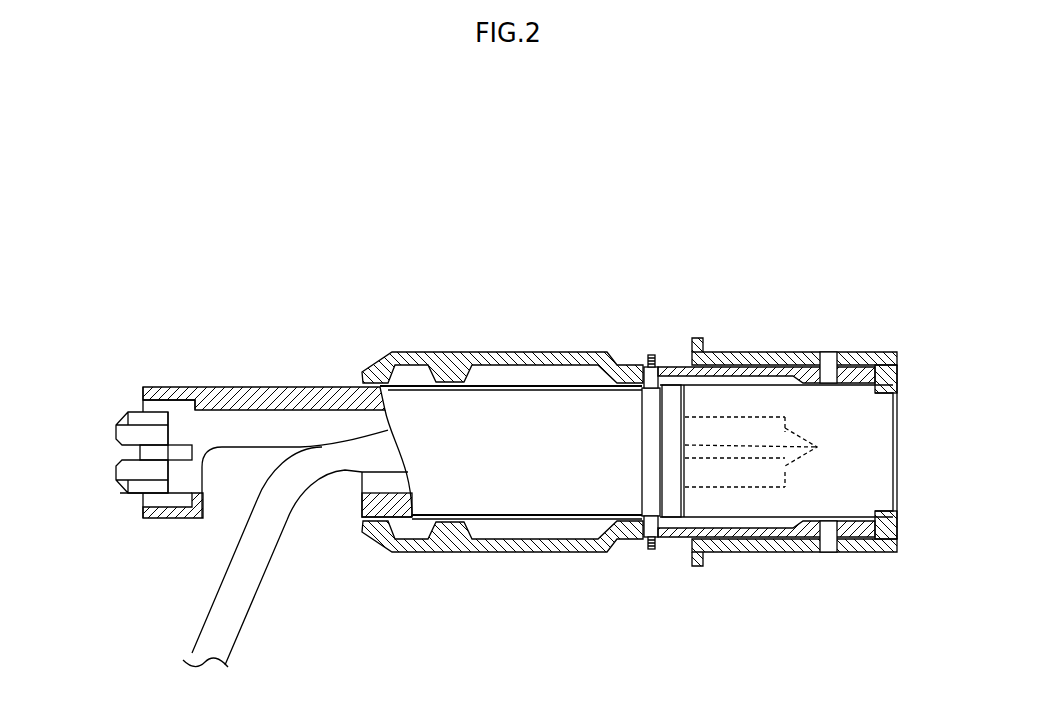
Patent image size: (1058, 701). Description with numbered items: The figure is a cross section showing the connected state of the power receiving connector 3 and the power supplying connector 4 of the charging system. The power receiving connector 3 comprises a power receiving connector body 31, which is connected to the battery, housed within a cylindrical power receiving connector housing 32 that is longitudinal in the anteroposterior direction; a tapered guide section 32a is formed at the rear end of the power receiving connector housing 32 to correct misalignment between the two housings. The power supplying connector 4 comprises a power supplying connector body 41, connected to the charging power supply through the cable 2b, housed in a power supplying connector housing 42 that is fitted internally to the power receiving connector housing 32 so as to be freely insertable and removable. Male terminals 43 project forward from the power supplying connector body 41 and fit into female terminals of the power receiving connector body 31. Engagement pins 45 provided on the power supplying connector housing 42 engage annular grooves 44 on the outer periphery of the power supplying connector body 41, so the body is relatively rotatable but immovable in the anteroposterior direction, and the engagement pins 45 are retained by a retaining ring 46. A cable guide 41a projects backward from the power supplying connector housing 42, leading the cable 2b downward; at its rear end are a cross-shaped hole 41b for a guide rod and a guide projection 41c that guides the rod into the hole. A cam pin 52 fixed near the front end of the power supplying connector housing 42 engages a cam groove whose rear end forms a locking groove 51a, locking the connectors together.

The cable 2b is at (250, 607).
The power receiving connector 3 is at (800, 436).
The power supplying connector 4 is at (365, 437).
The power receiving connector body 31 is at (895, 452).
The power receiving connector housing 32 is at (762, 351).
The guide section 32a is at (690, 360).
The power supplying connector body 41 is at (572, 512).
The cable guide 41a is at (259, 386).
The hole 41b is at (157, 519).
The guide projection 41c is at (116, 427).
The power supplying connector housing 42 is at (565, 351).
The male terminals 43 is at (766, 452).
The annular grooves 44 is at (660, 446).
The engagement pins 45 is at (644, 388).
The retaining ring 46 is at (652, 552).
The locking groove 51a is at (832, 351).
The cam pin 52 is at (827, 553).